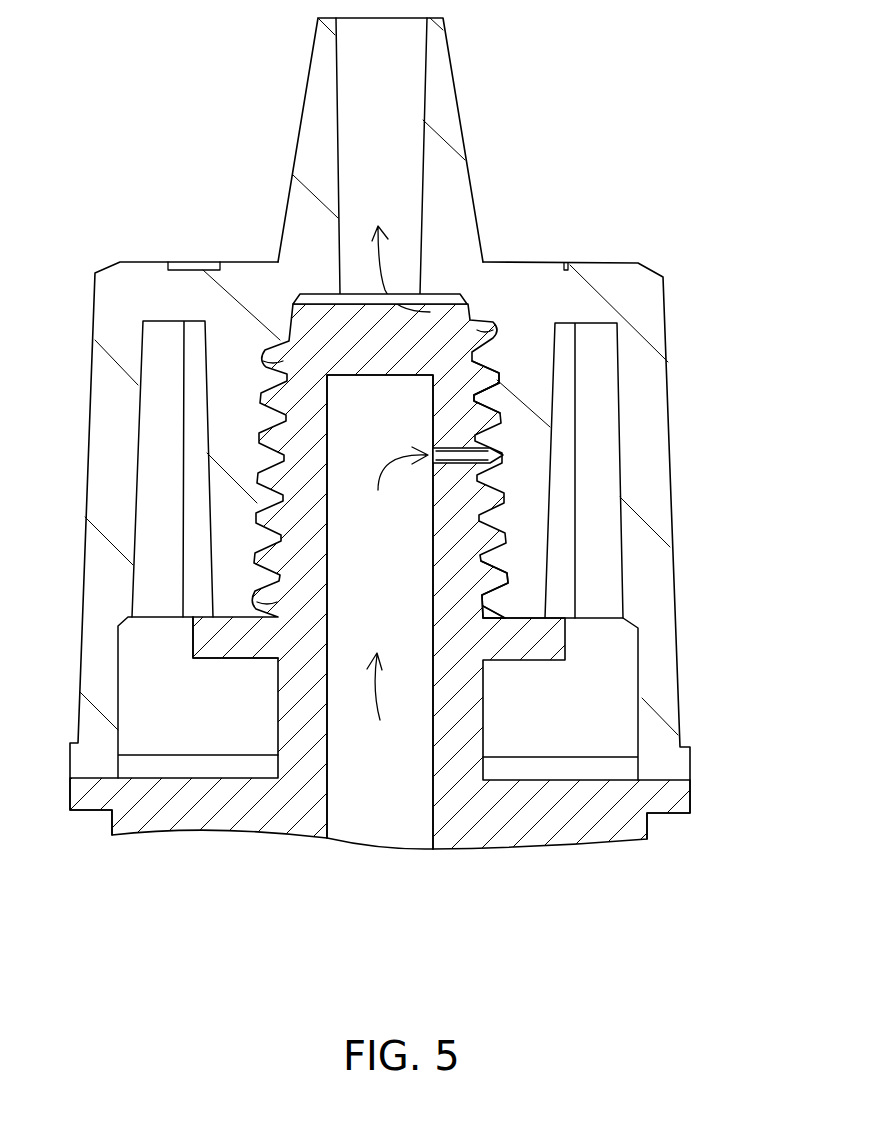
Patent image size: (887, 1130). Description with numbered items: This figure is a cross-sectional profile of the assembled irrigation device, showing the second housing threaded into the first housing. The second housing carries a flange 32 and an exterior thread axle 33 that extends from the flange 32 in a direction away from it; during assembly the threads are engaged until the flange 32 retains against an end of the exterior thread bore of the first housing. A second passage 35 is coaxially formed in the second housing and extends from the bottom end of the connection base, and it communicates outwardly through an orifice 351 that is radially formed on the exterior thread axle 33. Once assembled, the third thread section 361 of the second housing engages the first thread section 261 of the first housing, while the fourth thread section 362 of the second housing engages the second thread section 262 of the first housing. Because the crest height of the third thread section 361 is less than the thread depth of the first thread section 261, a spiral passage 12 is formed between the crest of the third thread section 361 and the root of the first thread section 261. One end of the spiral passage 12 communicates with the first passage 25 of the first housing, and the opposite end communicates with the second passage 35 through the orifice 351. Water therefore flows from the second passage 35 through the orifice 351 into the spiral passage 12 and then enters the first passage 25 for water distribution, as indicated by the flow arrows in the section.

The spiral passage 12 is at (503, 455).
The first passage 25 is at (387, 60).
The flange 32 is at (205, 633).
The exterior thread axle 33 is at (450, 322).
The second passage 35 is at (378, 818).
The first thread section 261 is at (492, 376).
The second thread section 262 is at (493, 540).
The orifice 351 is at (457, 457).
The third thread section 361 is at (490, 372).
The fourth thread section 362 is at (490, 573).